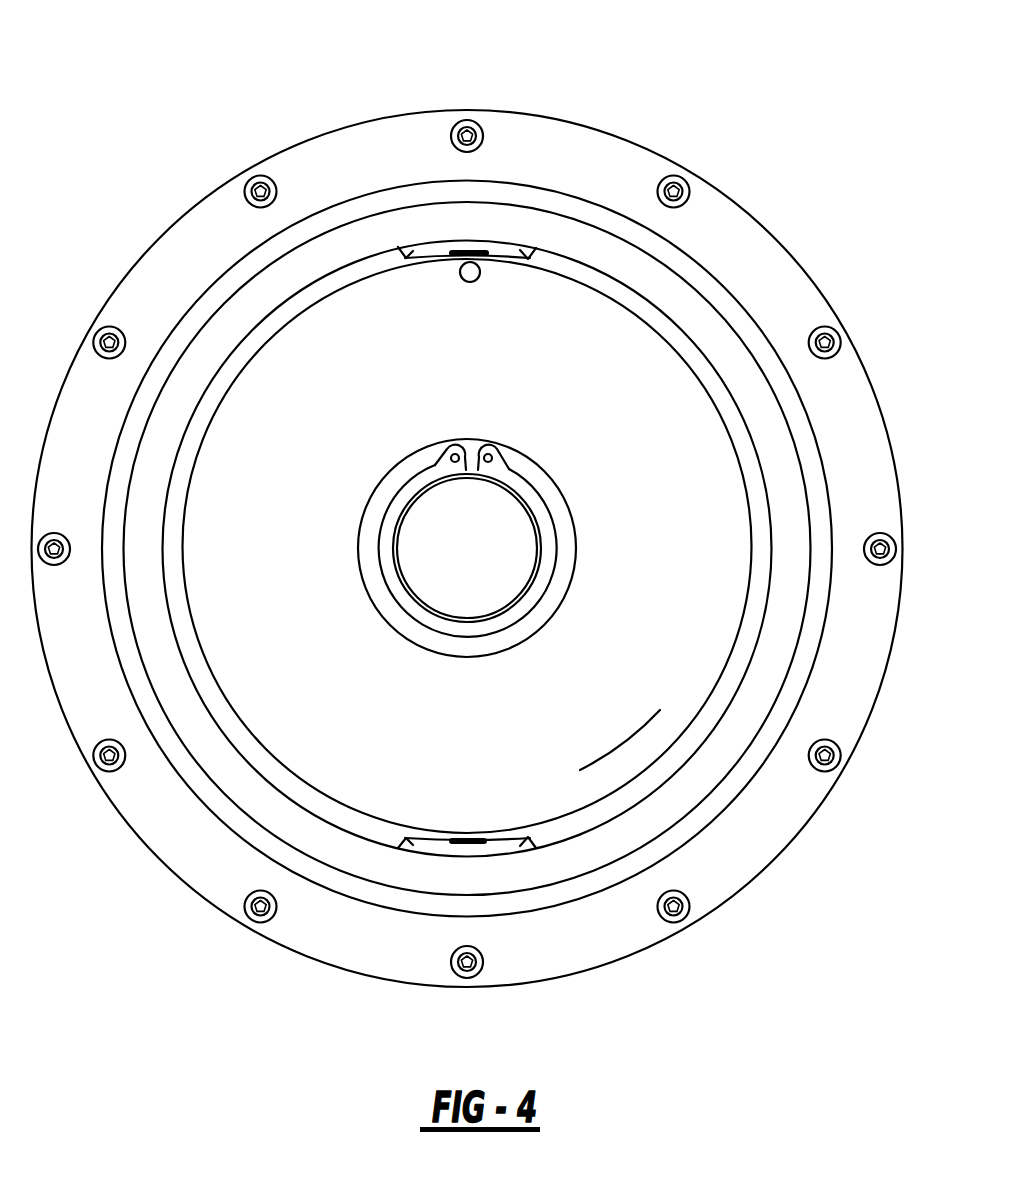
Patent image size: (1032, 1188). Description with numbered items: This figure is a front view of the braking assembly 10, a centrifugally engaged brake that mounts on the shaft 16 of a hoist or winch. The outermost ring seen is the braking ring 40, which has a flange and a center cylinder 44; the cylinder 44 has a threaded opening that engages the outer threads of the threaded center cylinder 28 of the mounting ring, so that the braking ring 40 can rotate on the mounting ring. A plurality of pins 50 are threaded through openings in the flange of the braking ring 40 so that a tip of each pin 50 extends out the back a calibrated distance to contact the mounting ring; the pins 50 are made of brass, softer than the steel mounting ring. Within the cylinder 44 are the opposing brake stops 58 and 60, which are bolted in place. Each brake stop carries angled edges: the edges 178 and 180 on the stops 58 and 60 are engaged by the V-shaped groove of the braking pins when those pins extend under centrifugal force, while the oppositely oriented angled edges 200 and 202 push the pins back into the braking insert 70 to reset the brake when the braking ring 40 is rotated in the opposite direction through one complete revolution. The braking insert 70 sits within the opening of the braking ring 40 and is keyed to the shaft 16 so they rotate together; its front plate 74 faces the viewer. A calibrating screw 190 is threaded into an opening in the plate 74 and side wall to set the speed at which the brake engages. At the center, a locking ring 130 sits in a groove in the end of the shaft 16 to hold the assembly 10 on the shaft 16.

The braking assembly 10 is at (813, 106).
The shaft 16 is at (477, 565).
The threaded center cylinder 28 is at (730, 688).
The braking ring 40 is at (798, 238).
The center cylinder 44 is at (605, 253).
The pins 50 is at (252, 168).
The brake stop 58 is at (450, 850).
The brake stop 60 is at (495, 247).
The braking insert 70 is at (760, 482).
The front plate 74 is at (613, 748).
The locking ring 130 is at (538, 582).
The angled edge 178 is at (402, 840).
The angled edge 180 is at (540, 258).
The calibrating screw 190 is at (468, 283).
The angled edge 200 is at (395, 262).
The angled edge 202 is at (540, 838).